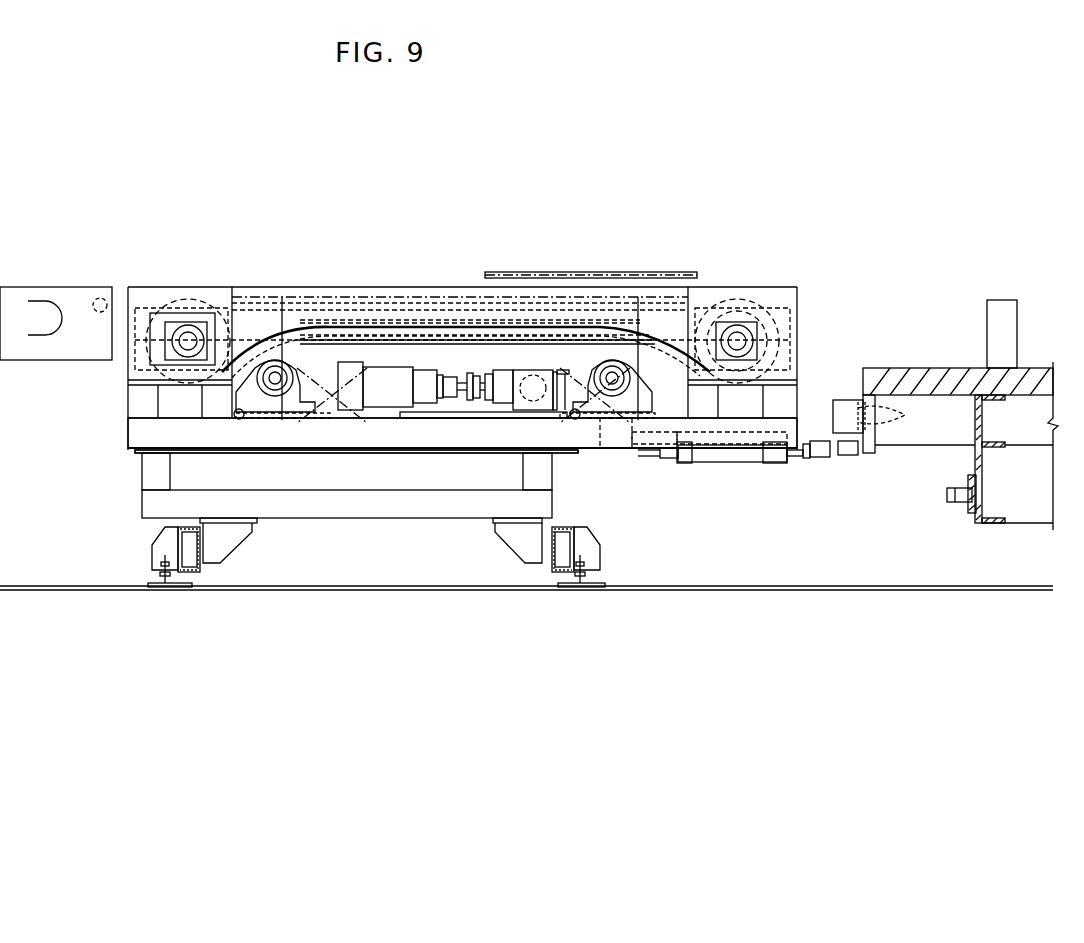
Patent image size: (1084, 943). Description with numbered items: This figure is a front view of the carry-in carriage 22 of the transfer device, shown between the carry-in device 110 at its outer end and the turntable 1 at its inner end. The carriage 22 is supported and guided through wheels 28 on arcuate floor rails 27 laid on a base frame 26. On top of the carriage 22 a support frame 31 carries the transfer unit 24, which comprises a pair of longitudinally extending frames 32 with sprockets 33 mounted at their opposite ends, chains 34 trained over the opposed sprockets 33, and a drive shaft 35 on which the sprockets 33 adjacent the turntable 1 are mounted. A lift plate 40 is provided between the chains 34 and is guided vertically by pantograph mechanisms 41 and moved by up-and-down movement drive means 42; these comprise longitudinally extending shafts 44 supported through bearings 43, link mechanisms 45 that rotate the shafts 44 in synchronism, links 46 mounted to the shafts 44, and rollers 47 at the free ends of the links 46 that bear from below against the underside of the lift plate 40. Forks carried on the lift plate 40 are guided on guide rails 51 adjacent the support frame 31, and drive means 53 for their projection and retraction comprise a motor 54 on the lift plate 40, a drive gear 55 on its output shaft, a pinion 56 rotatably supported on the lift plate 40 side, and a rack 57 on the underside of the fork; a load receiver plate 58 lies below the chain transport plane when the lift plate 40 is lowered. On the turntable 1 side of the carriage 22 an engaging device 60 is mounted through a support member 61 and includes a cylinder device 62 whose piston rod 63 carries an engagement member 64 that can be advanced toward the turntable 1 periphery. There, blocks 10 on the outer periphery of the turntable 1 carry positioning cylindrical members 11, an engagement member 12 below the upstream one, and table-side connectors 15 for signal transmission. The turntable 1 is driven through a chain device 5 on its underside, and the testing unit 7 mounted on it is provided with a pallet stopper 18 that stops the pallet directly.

The turntable 1 is at (985, 527).
The chain device 5 is at (955, 500).
The testing unit 7 is at (925, 372).
The block 10 is at (925, 447).
The positioning cylindrical member 11 is at (850, 408).
The engagement member 12 is at (851, 456).
The table-side connector 15 is at (895, 412).
The pallet stopper 18 is at (1022, 324).
The carry-in carriage 22 is at (140, 498).
The transfer unit 24 is at (398, 300).
The base frame 26 is at (183, 590).
The floor rail 27 is at (160, 550).
The wheel 28 is at (192, 570).
The support frame 31 is at (138, 437).
The longitudinally extending frame 32 is at (244, 297).
The sprocket 33 is at (185, 305).
The chain 34 is at (375, 300).
The drive shaft 35 is at (748, 300).
The lift plate 40 is at (434, 340).
The pantograph mechanism 41 is at (343, 448).
The up-and-down movement drive means 42 is at (263, 447).
The bearing 43 is at (283, 300).
The longitudinally extending shaft 44 is at (276, 378).
The link mechanism 45 is at (397, 453).
The link 46 is at (262, 420).
The roller 47 is at (350, 380).
The guide rail 51 is at (332, 292).
The drive means 53 is at (480, 448).
The motor 54 is at (398, 380).
The drive gear 55 is at (531, 420).
The pinion 56 is at (533, 375).
The rack 57 is at (468, 335).
The load receiver plate 58 is at (555, 300).
The engaging device 60 is at (722, 470).
The support member 61 is at (623, 450).
The cylinder device 62 is at (745, 462).
The piston rod 63 is at (806, 458).
The engagement member 64 is at (822, 458).
The carry-in device 110 is at (27, 287).